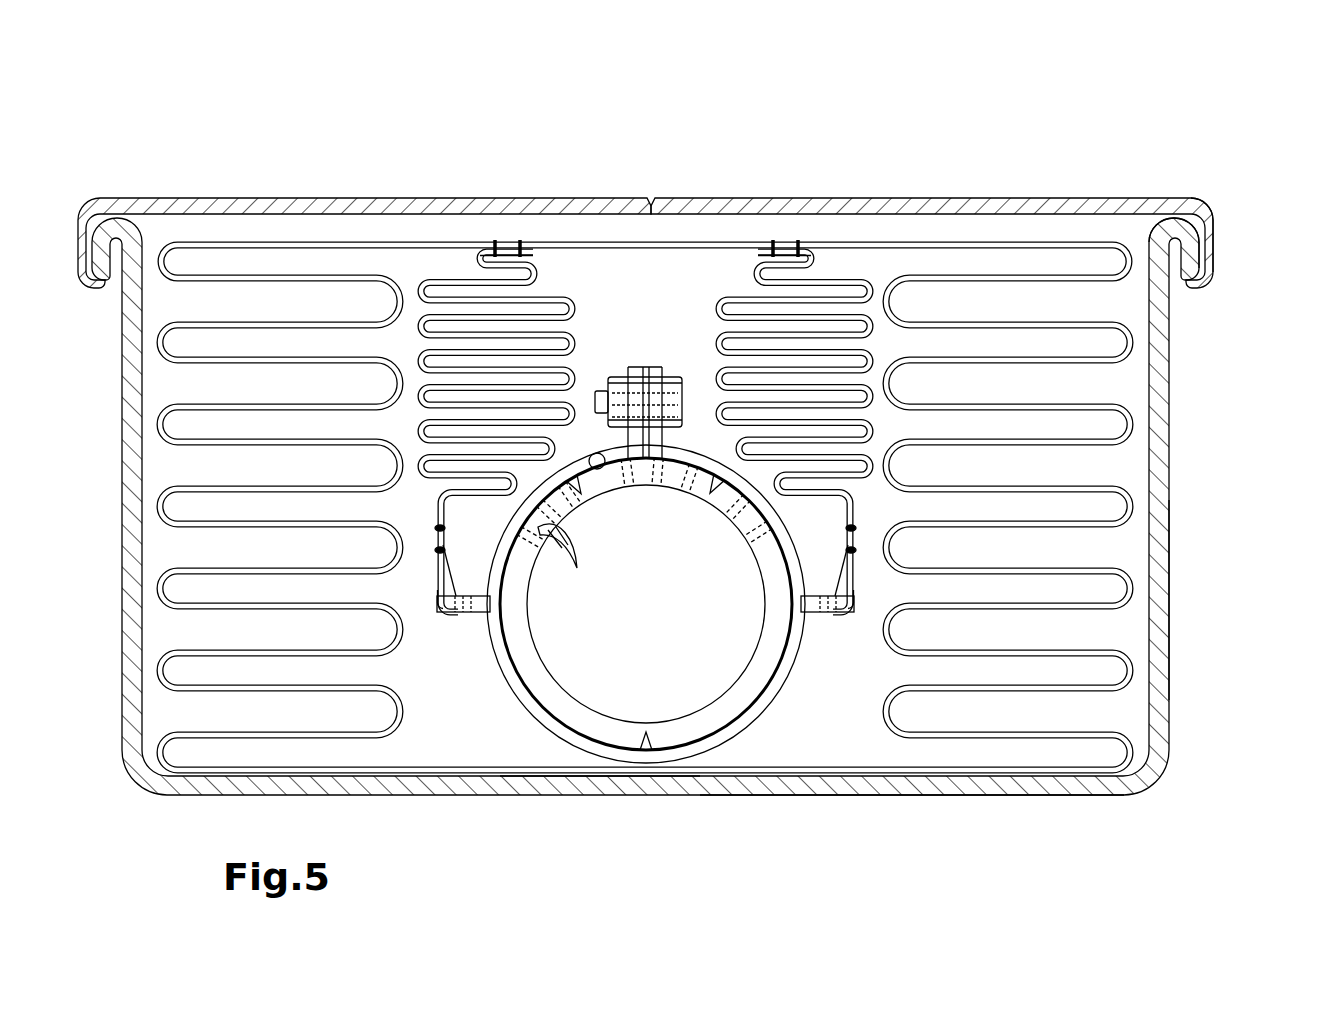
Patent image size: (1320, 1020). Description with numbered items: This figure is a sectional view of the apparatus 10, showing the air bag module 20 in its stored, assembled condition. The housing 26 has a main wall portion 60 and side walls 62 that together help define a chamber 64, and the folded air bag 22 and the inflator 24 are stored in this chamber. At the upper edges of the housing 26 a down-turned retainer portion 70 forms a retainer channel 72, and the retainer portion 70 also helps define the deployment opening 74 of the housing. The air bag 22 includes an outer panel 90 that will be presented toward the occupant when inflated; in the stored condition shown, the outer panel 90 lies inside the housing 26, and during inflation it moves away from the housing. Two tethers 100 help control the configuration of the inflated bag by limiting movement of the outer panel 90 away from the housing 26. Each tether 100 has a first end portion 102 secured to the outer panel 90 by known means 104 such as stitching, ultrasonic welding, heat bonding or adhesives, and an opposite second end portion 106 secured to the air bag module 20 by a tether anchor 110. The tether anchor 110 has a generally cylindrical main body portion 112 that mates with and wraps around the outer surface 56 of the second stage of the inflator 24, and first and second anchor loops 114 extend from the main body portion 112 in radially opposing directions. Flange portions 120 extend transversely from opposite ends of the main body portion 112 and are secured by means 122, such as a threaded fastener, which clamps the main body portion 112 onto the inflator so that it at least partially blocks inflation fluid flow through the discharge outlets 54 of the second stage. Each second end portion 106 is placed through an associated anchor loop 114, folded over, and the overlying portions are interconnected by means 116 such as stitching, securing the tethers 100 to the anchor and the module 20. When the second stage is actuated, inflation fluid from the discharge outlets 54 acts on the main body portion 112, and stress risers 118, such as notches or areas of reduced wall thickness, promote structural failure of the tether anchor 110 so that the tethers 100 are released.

The apparatus 10 is at (692, 460).
The air bag module 20 is at (692, 460).
The air bag 22 is at (1172, 470).
The inflator 24 is at (706, 716).
The housing 26 is at (604, 790).
The discharge outlets 54 is at (578, 569).
The outer surface 56 is at (601, 469).
The main wall portion 60 is at (882, 794).
The side walls 62 is at (1172, 590).
The chamber 64 is at (688, 265).
The retainer portion 70 is at (1212, 245).
The retainer channel 72 is at (1177, 222).
The deployment opening 74 is at (631, 243).
The outer panel 90 is at (727, 243).
The tethers 100 is at (714, 316).
The first end portion 102 is at (489, 249).
The means 104 is at (520, 240).
The second end portion 106 is at (447, 610).
The tether anchor 110 is at (543, 718).
The main body portion 112 is at (700, 457).
The anchor loops 114 is at (470, 614).
The means 116 is at (438, 549).
The stress risers 118 is at (565, 472).
The flange portions 120 is at (647, 372).
The means 122 is at (670, 380).